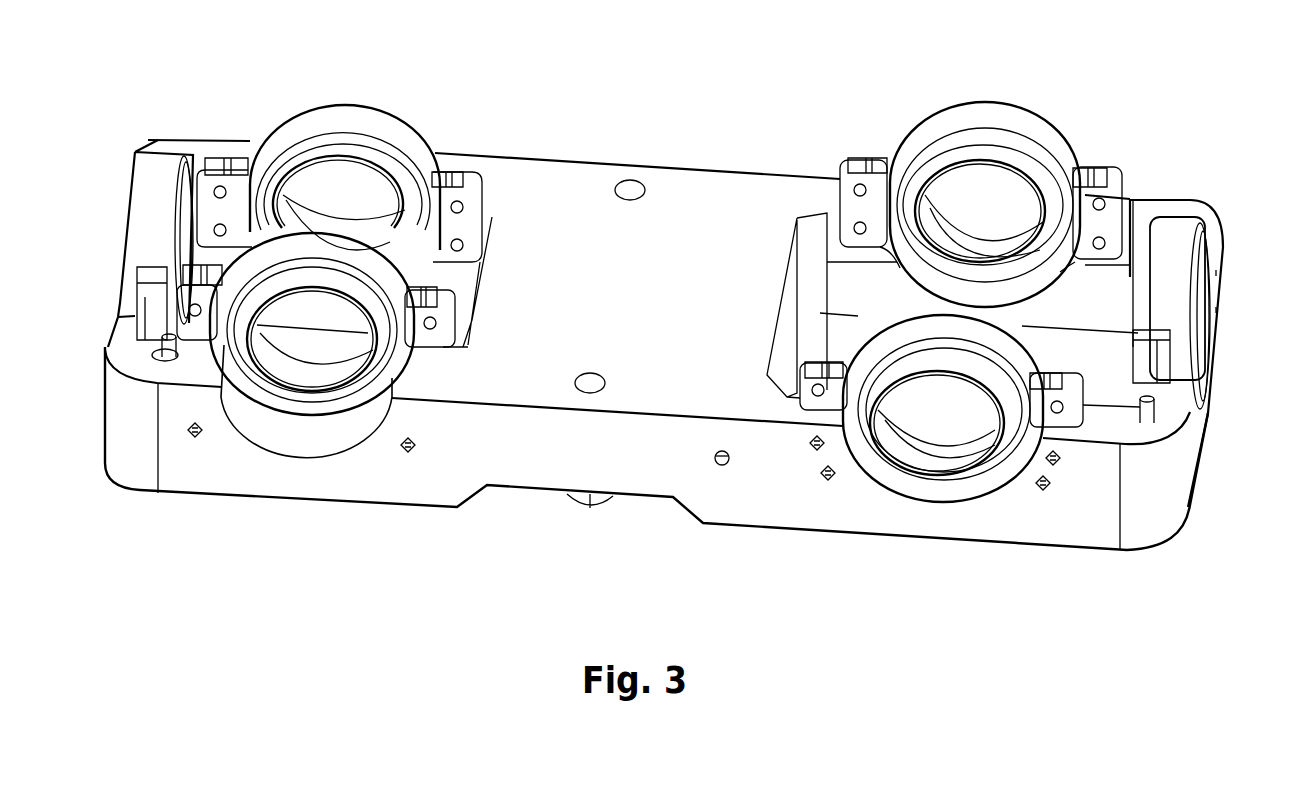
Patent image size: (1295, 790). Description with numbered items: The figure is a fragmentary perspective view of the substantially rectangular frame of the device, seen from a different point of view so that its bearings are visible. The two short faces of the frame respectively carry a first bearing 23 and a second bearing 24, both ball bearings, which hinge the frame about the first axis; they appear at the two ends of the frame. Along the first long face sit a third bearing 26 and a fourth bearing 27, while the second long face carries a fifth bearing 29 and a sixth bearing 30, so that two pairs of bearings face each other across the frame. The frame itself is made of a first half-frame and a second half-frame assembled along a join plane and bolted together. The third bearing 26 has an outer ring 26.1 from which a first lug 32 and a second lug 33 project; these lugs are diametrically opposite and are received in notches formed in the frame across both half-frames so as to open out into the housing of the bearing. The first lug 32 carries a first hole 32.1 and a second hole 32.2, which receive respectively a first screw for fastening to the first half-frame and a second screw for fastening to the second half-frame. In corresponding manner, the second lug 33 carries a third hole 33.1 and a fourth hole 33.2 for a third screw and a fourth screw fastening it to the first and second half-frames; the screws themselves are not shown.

The first bearing 23 is at (1183, 227).
The second bearing 24 is at (143, 208).
The third bearing 26 is at (950, 155).
The outer ring 26.1 is at (1028, 123).
The fourth bearing 27 is at (363, 117).
The fifth bearing 29 is at (927, 490).
The sixth bearing 30 is at (303, 407).
The first lug 32 is at (811, 180).
The first hole 32.1 is at (853, 190).
The second hole 32.2 is at (853, 228).
The second lug 33 is at (1135, 177).
The third hole 33.1 is at (1105, 203).
The fourth hole 33.2 is at (1105, 240).